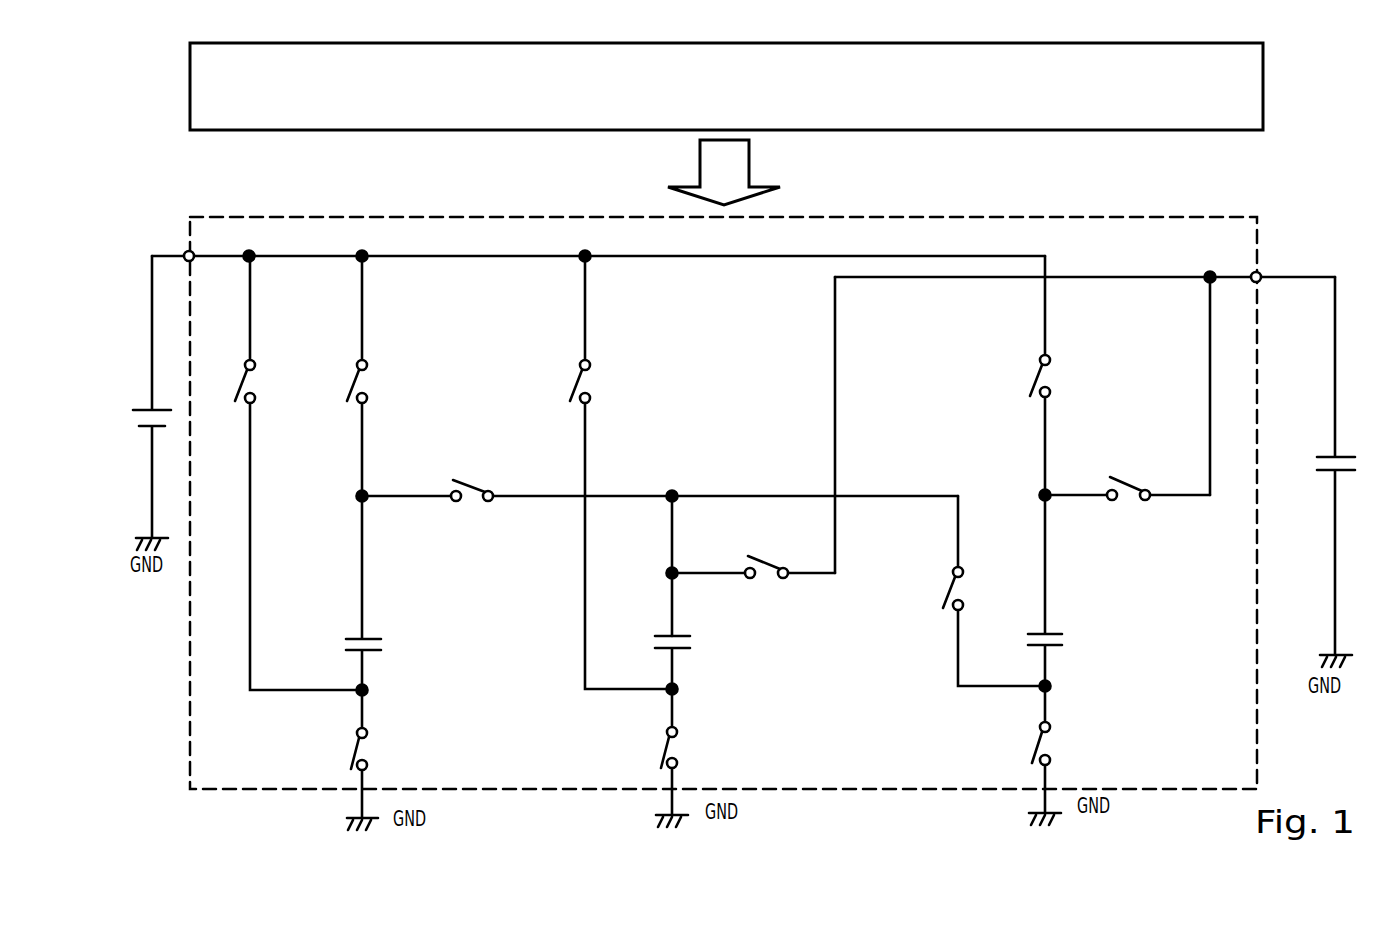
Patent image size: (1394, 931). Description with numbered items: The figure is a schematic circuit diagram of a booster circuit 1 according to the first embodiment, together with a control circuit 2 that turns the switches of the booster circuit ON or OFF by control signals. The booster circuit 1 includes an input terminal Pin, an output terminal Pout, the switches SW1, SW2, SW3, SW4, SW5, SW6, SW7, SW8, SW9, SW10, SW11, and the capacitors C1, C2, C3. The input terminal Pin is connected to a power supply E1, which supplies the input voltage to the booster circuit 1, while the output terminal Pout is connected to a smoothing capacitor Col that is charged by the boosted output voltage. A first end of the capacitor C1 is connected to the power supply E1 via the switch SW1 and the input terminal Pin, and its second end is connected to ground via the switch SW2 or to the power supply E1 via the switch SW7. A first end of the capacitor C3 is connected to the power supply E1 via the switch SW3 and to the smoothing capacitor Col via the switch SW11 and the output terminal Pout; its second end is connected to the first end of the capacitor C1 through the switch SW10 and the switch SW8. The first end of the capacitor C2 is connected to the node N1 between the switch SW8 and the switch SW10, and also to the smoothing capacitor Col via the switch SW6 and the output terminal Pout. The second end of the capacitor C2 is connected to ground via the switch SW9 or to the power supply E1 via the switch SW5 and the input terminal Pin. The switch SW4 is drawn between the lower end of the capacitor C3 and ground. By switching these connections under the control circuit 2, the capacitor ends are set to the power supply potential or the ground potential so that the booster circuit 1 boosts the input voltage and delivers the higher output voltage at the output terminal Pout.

The booster circuit 1 is at (1147, 216).
The control circuit 2 is at (190, 119).
The power supply E1 is at (145, 403).
The input terminal Pin is at (172, 242).
The output terminal Pout is at (1281, 264).
The switch SW1 is at (337, 376).
The switch SW2 is at (344, 760).
The switch SW3 is at (1017, 375).
The switch SW4 is at (1024, 755).
The switch (fourth switch unit) SW5 is at (601, 472).
The switch (fifth switch unit) SW6 is at (753, 557).
The switch (first switch unit) SW7 is at (279, 473).
The switch (second switch unit) SW8 is at (660, 479).
The switch (switch unit) SW9 is at (652, 758).
The switch (sixth switch unit) SW10 is at (966, 591).
The switch SW11 is at (1127, 478).
The capacitor C1 is at (379, 593).
The capacitor (second boosting capacitor) C2 is at (688, 654).
The capacitor C3 is at (1059, 590).
The smoothing capacitor Col is at (1326, 472).
The node N1 is at (671, 484).